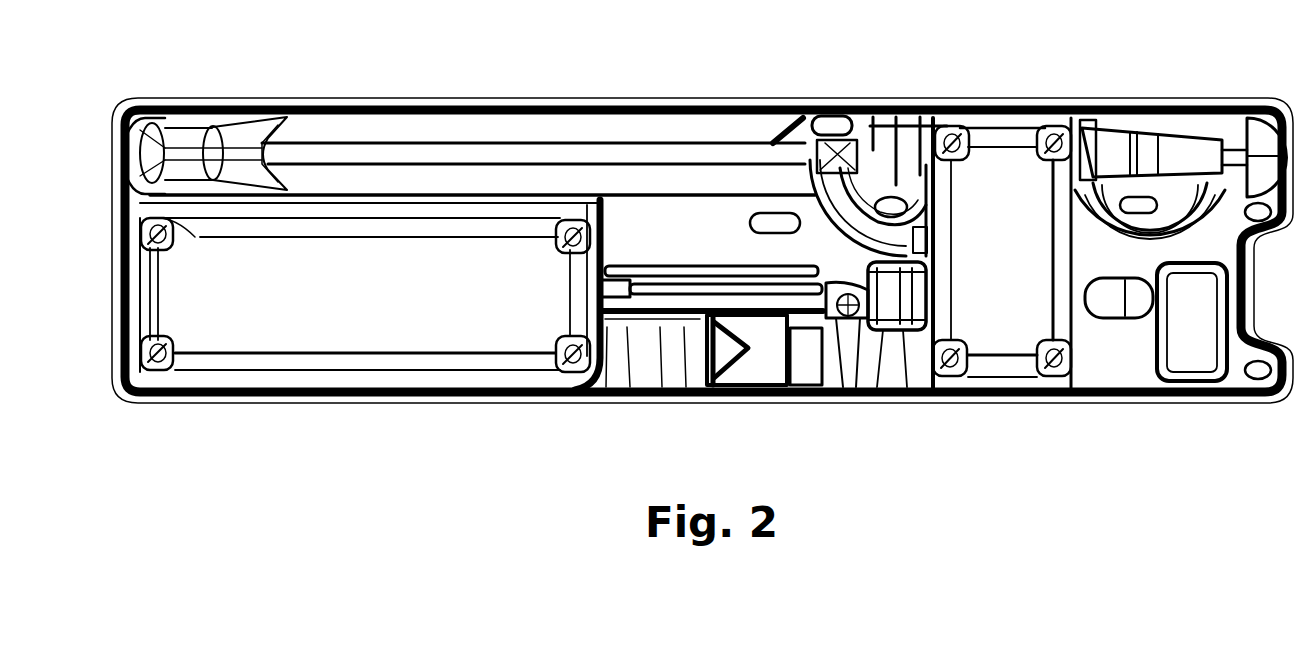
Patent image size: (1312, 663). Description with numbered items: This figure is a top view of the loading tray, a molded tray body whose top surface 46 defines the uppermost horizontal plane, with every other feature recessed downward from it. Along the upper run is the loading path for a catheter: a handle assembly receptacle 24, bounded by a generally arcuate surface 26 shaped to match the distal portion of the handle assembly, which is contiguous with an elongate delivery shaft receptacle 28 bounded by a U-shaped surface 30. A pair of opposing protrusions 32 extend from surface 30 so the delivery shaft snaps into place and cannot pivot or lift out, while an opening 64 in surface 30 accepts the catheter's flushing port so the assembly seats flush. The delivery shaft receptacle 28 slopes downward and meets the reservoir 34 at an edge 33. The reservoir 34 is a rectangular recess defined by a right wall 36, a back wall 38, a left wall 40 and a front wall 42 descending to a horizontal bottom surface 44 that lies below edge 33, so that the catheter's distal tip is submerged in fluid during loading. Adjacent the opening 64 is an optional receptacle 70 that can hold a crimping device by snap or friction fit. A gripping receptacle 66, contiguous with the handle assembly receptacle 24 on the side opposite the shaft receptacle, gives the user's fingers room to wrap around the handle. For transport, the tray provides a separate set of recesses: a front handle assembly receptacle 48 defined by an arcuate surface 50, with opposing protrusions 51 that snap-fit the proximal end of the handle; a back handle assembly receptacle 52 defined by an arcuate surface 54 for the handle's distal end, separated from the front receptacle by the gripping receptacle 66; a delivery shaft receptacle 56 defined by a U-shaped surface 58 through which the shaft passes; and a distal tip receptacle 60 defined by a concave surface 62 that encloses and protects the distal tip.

The handle assembly receptacle 24 is at (912, 330).
The arcuate surface 26 is at (880, 343).
The elongate delivery shaft receptacle 28 is at (683, 300).
The surface 30 is at (663, 325).
The opposing protrusions 32 is at (631, 325).
The edge 33 is at (607, 325).
The reservoir 34 is at (273, 323).
The right wall 36 is at (140, 243).
The back wall 38 is at (150, 283).
The left wall 40 is at (430, 362).
The front wall 42 is at (577, 322).
The bottom surface 44 is at (356, 327).
The top surface 46 is at (388, 125).
The front handle assembly receptacle 48 is at (1192, 156).
The arcuate surface 50 is at (1143, 147).
The opposing protrusions 51 is at (1113, 130).
The back handle assembly receptacle 52 is at (913, 150).
The arcuate surface 54 is at (876, 123).
The delivery shaft receptacle 56 is at (522, 143).
The U-shaped surface 58 is at (633, 158).
The distal tip receptacle 60 is at (232, 116).
The concave surface 62 is at (128, 148).
The opening 64 is at (857, 340).
The gripping receptacle 66 is at (995, 308).
The receptacle 70 is at (770, 348).